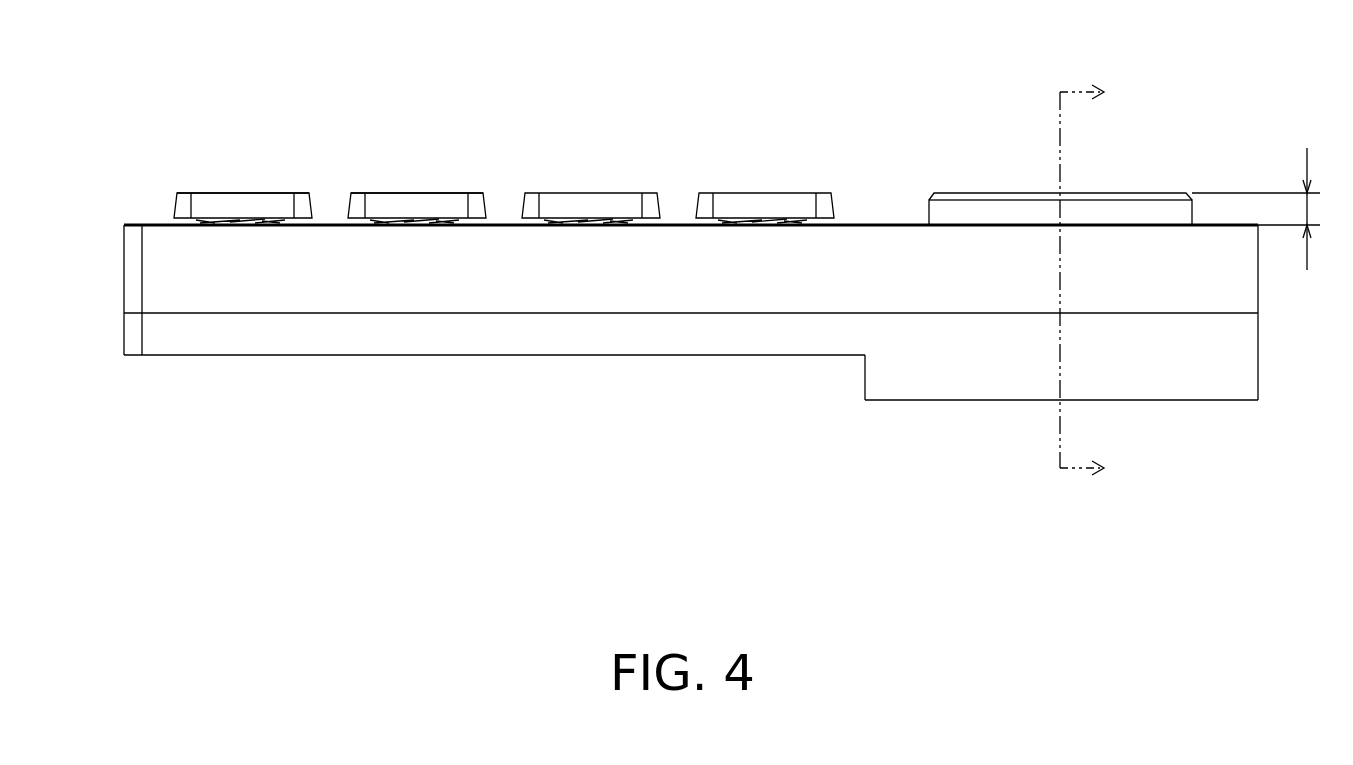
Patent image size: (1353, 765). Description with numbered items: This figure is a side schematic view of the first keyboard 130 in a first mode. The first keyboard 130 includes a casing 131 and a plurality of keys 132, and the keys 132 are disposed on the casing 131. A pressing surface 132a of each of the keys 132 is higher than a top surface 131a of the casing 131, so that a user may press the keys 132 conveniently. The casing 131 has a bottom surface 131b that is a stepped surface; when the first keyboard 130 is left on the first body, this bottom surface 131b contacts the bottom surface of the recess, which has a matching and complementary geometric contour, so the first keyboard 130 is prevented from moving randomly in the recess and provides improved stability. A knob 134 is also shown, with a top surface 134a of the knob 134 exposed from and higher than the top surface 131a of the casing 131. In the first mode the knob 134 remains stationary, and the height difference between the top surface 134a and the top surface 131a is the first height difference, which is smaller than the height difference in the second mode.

The first keyboard 130 is at (223, 378).
The casing 131 is at (387, 343).
The top surface of the casing 131a is at (865, 225).
The bottom surface of the casing 131b is at (752, 356).
The keys 132 is at (450, 198).
The pressing surface 132a is at (415, 193).
The knob 134 is at (1147, 210).
The top surface of the knob 134a is at (967, 192).